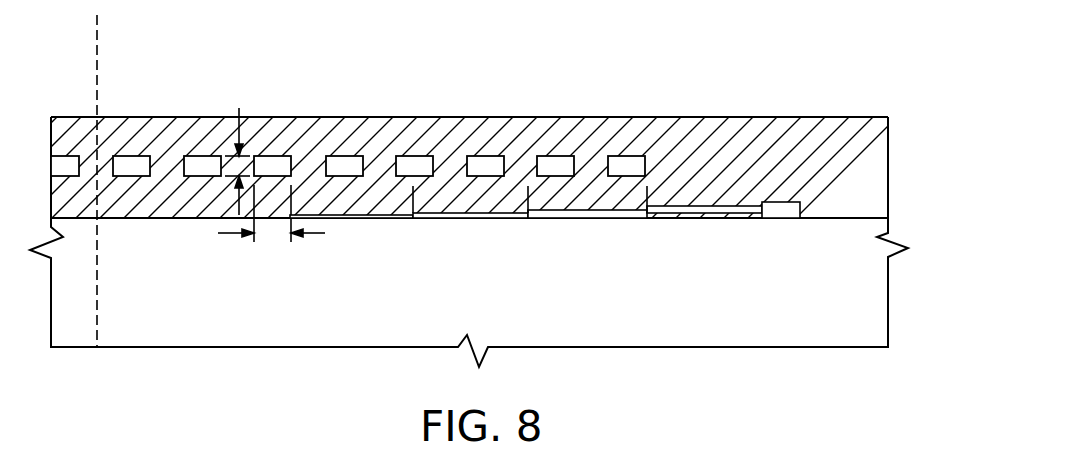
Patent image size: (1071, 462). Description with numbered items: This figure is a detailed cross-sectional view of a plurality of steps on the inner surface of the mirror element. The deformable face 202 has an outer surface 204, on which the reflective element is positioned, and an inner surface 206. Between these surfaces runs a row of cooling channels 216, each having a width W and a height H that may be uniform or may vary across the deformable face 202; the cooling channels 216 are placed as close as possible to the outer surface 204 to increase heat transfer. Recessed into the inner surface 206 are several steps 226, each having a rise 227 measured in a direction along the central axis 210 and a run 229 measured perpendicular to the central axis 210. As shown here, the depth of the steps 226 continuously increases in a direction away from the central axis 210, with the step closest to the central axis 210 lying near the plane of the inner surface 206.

The deformable face 202 is at (853, 175).
The outer surface 204 is at (775, 117).
The inner surface 206 is at (852, 218).
The central axis 210 is at (98, 86).
The cooling channels 216 is at (270, 162).
The steps 226 is at (357, 224).
The rise 227 is at (702, 235).
The run 229 is at (419, 196).